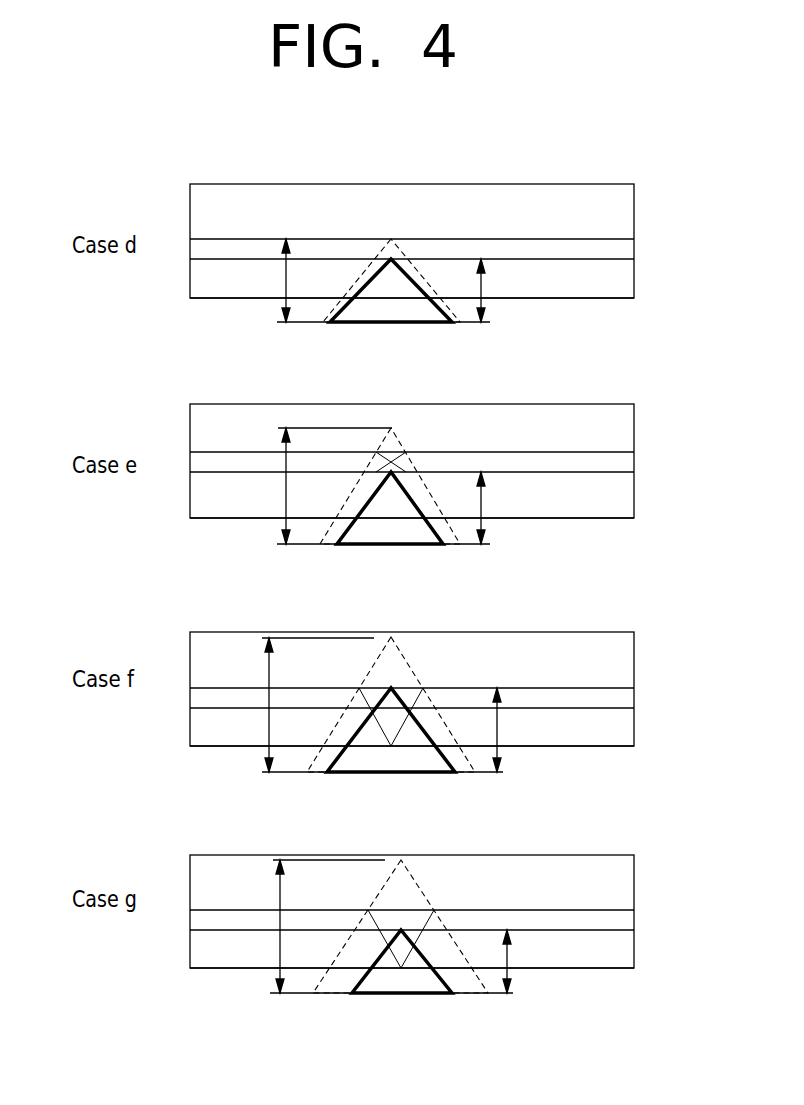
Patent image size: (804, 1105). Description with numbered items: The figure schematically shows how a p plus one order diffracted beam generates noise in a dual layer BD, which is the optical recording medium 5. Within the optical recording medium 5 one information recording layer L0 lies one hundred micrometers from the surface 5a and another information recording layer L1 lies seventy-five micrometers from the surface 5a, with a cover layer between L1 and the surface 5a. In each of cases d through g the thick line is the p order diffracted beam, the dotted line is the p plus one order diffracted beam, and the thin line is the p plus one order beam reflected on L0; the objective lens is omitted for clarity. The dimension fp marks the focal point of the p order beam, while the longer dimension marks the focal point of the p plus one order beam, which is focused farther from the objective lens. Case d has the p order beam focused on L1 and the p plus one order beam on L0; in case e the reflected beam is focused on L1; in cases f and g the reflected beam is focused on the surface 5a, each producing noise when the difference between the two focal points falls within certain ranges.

The optical recording medium 5 is at (636, 170).
The surface 5a is at (214, 298).
The information recording layer L0 is at (396, 573).
The information recording layer L1 is at (396, 596).
The focal point of the p order diffracted beam fp is at (504, 626).